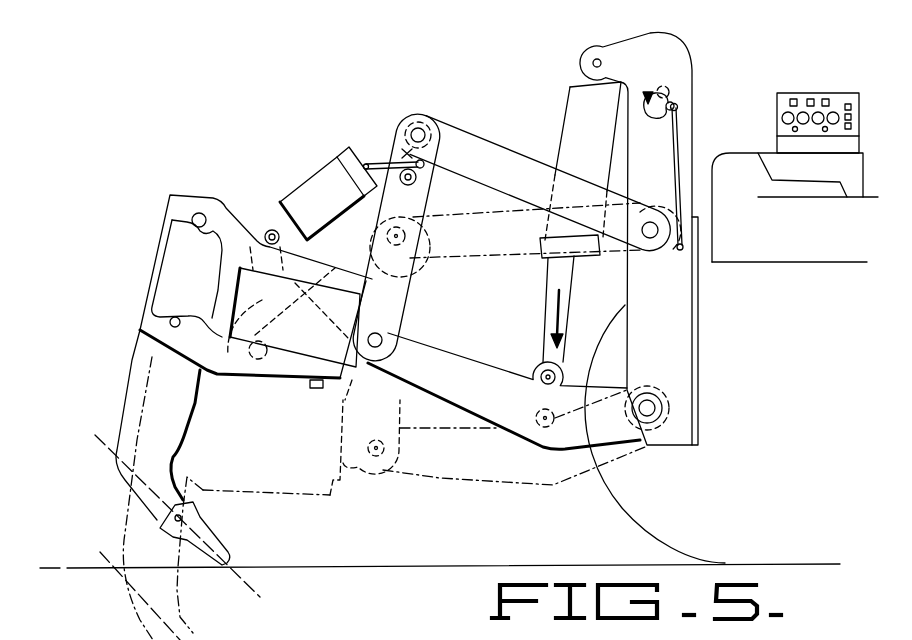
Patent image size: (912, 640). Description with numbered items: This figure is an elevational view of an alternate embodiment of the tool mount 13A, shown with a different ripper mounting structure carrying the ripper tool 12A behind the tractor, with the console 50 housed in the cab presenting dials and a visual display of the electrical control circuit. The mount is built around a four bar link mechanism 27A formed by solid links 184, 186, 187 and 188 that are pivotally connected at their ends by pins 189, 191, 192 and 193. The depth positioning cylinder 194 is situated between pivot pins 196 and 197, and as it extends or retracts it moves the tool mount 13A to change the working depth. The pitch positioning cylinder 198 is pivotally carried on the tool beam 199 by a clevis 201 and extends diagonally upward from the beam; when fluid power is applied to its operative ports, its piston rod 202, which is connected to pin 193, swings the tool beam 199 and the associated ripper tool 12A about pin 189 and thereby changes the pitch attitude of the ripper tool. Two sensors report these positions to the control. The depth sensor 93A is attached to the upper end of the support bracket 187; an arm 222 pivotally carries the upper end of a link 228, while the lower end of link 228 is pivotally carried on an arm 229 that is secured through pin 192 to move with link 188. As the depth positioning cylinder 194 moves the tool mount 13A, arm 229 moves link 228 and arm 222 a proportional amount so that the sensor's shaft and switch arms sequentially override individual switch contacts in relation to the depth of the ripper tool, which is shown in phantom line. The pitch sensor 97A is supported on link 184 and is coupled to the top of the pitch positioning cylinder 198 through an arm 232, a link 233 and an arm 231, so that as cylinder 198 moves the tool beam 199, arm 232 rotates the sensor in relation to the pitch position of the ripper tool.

The ripper tool 12A is at (117, 493).
The tool mount 13A is at (246, 147).
The four bar link mechanism 27A is at (462, 438).
The console 50 is at (813, 93).
The depth sensor 93A is at (648, 92).
The pitch sensor 97A is at (416, 200).
The link 184 is at (418, 268).
The link 186 is at (458, 368).
The support bracket 187 is at (693, 313).
The link 188 is at (468, 143).
The pin 189 is at (380, 340).
The pin 191 is at (652, 410).
The pin 192 is at (657, 232).
The pin 193 is at (419, 127).
The depth positioning cylinder 194 is at (566, 103).
The pivot pin 196 is at (597, 50).
The pivot pin 197 is at (557, 368).
The pitch positioning cylinder 198 is at (305, 186).
The tool beam 199 is at (317, 350).
The clevis 201 is at (267, 228).
The piston rod 202 is at (388, 150).
The arm 222 is at (668, 100).
The link 228 is at (678, 133).
The arm 229 is at (684, 258).
The arm 231 is at (358, 193).
The arm 232 is at (424, 172).
The link 233 is at (380, 228).